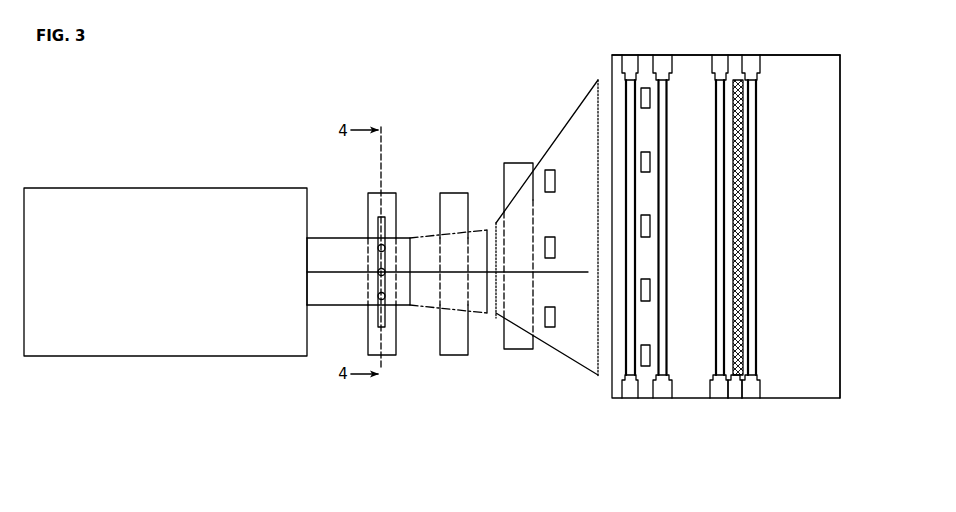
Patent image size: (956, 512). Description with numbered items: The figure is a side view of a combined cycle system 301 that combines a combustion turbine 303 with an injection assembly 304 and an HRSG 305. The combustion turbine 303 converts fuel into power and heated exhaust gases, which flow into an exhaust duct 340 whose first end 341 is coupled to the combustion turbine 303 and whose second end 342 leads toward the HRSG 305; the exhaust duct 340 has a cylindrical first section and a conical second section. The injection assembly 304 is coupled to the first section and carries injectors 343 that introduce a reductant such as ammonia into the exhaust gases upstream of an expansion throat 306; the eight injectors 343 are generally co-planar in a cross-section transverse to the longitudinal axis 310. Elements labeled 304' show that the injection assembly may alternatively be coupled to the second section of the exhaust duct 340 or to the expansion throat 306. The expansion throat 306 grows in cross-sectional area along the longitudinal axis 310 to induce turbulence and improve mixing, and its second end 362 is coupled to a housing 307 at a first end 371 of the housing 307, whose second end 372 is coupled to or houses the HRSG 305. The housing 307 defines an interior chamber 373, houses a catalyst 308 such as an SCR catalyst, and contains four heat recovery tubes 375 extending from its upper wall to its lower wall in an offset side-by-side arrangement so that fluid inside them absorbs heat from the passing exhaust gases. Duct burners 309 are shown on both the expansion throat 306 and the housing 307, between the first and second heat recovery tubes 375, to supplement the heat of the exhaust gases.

The combined cycle system 301 is at (257, 456).
The combustion turbine 303 is at (165, 279).
The injection assembly 304 is at (336, 236).
The injection assembly at alternative location 304' is at (435, 301).
The HRSG 305 is at (726, 226).
The expansion throat 306 is at (553, 352).
The housing 307 is at (828, 53).
The catalyst 308 is at (738, 84).
The duct burners 309 is at (643, 272).
The longitudinal axis 310 is at (528, 268).
The exhaust duct 340 is at (353, 307).
The first end of exhaust duct 341 is at (303, 279).
The second end of exhaust duct 342 is at (500, 255).
The injector 343 is at (380, 290).
The second end of expansion throat 362 is at (595, 332).
The first end of housing 371 is at (842, 367).
The second end of housing 372 is at (600, 352).
The interior chamber 373 is at (692, 227).
The heat recovery tubes 375 is at (745, 368).